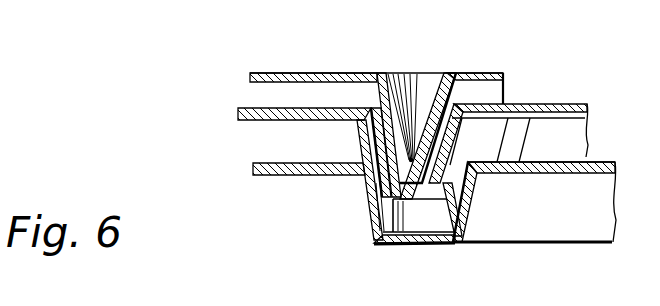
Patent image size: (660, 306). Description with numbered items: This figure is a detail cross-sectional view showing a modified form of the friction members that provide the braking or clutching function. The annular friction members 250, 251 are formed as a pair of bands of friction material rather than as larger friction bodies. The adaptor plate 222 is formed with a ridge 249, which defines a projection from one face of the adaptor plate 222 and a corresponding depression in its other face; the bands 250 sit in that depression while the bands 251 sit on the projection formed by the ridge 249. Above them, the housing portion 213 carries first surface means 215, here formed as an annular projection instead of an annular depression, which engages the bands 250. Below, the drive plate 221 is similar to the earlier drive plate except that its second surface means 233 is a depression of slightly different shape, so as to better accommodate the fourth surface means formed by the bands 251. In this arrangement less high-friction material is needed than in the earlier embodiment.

The housing portion 213 is at (312, 54).
The first surface means 215 is at (425, 55).
The annular friction members 250 is at (377, 108).
The adaptor plate 222 is at (243, 111).
The annular friction members 251 is at (360, 145).
The second surface means 233 is at (399, 218).
The ridge 249 is at (462, 214).
The drive plate 221 is at (567, 174).